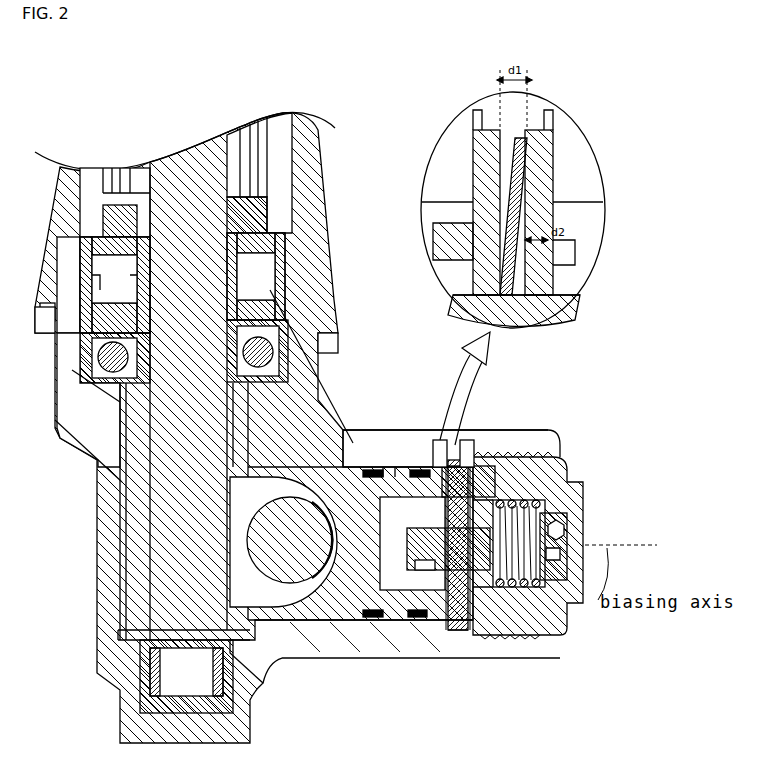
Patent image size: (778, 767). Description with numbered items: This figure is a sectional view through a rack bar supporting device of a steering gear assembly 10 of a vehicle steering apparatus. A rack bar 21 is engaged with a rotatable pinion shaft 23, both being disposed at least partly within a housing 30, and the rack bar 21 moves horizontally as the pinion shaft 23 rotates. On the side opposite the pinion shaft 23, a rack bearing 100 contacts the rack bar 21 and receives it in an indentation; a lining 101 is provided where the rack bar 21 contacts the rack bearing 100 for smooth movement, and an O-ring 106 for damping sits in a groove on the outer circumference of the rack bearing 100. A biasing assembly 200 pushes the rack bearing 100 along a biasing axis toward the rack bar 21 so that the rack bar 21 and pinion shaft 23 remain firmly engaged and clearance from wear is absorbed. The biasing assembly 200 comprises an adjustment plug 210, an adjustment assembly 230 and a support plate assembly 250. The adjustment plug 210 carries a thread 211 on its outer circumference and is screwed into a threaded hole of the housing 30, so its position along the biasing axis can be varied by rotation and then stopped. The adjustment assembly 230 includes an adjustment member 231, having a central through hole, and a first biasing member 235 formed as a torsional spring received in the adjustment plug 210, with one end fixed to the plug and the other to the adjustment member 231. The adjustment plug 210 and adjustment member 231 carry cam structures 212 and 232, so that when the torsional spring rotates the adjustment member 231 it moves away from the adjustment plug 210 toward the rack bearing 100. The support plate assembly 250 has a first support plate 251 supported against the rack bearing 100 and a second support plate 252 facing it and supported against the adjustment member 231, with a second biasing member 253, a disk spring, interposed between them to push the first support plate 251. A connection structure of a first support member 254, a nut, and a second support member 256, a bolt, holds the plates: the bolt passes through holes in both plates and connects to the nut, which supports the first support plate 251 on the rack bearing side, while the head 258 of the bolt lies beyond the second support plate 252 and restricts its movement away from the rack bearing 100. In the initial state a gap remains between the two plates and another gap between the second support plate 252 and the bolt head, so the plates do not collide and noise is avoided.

The steering gear assembly 10 is at (333, 193).
The rack bar 21 is at (290, 655).
The pinion shaft 23 is at (97, 493).
The housing 30 is at (318, 398).
The rack bearing 100 is at (343, 622).
The lining 101 is at (298, 622).
The O-ring 106 is at (385, 465).
The biasing assembly 200 is at (497, 414).
The adjustment plug 210 is at (572, 628).
The thread 211 is at (537, 637).
The cam structure 212 is at (530, 450).
The adjustment assembly 230 is at (490, 450).
The adjustment member 231 is at (452, 627).
The cam structure 232 is at (520, 440).
The first biasing member 235 is at (567, 492).
The support plate assembly 250 is at (452, 613).
The first support plate 251 is at (440, 460).
The second support plate 252 is at (462, 462).
The second biasing member 253 is at (427, 617).
The first support member 254 is at (405, 605).
The second support member 256 is at (450, 645).
The head of the bolt 258 is at (485, 640).